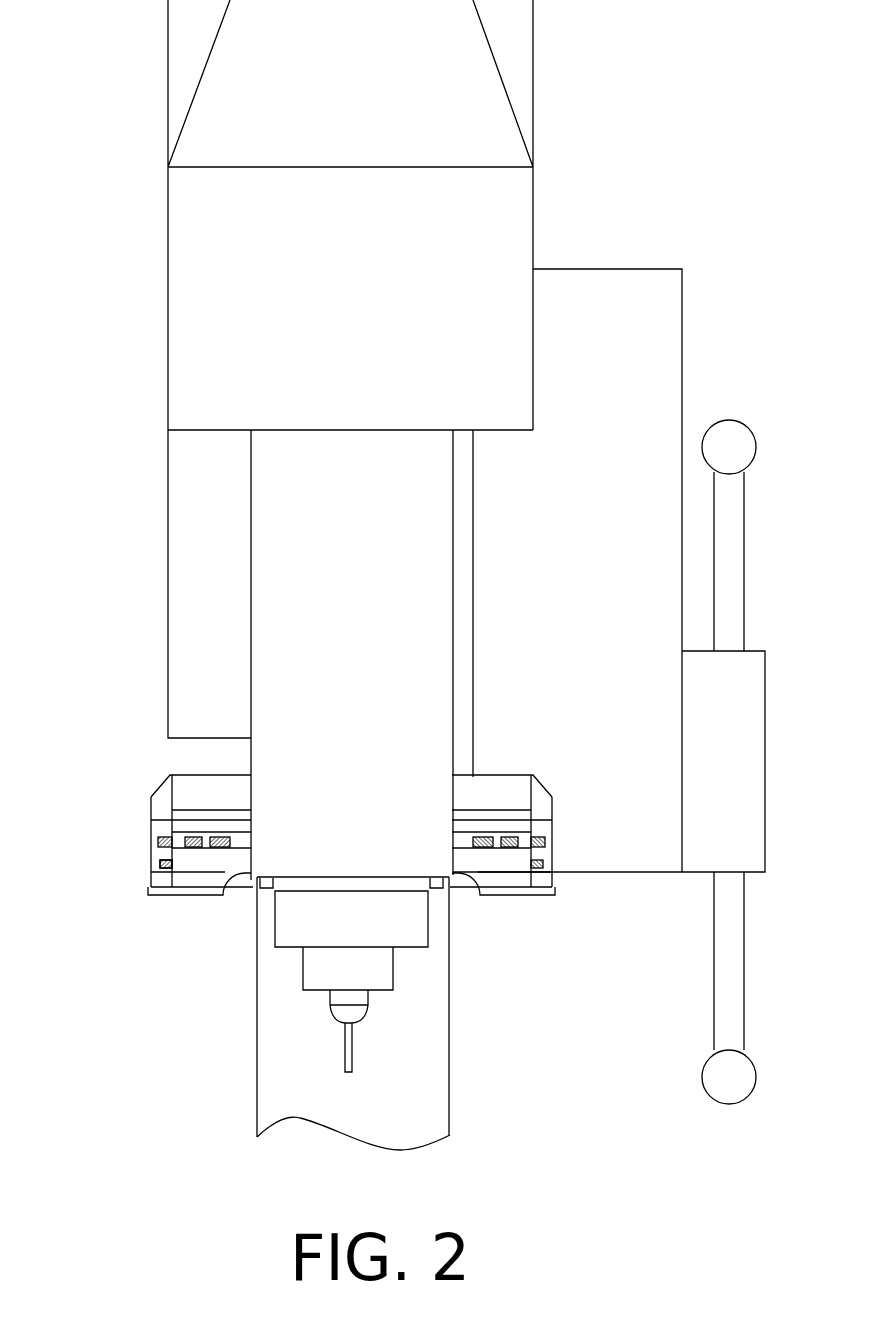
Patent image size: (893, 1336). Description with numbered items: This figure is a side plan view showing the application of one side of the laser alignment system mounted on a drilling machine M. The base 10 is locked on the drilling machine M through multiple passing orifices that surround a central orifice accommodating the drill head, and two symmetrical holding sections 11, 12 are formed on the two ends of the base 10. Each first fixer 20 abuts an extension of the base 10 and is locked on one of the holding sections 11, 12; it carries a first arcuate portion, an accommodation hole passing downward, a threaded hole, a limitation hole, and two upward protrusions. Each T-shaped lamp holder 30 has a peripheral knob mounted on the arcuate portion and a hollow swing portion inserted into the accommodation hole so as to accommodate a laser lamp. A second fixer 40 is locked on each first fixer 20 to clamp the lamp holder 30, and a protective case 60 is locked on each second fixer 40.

The drilling machine M is at (632, 298).
The base 10 is at (367, 878).
The holding section 11 is at (520, 900).
The holding section 12 is at (178, 897).
The first fixer 20 is at (147, 856).
The lamp holder 30 is at (252, 826).
The second fixer 40 is at (157, 788).
The protective case 60 is at (148, 798).